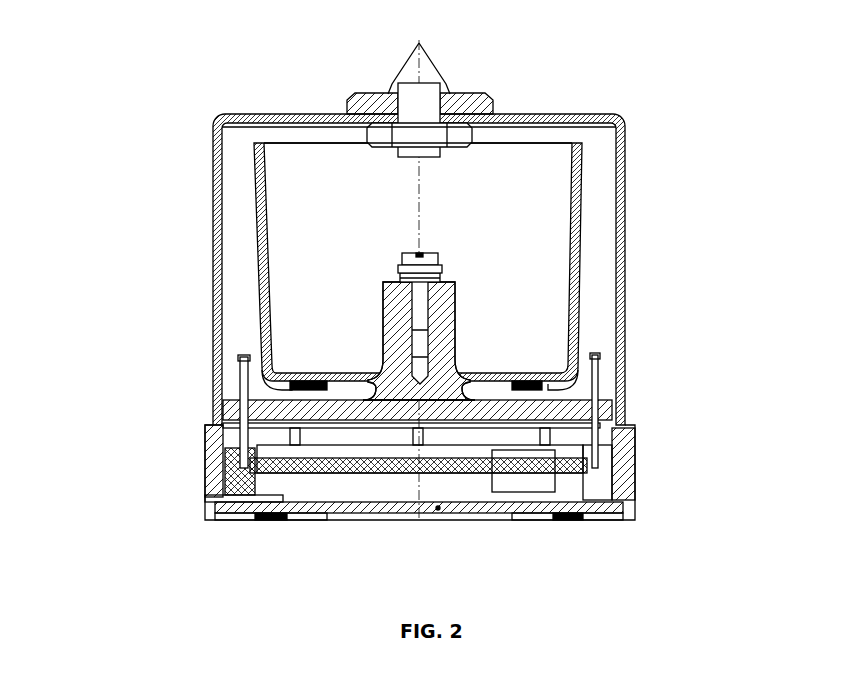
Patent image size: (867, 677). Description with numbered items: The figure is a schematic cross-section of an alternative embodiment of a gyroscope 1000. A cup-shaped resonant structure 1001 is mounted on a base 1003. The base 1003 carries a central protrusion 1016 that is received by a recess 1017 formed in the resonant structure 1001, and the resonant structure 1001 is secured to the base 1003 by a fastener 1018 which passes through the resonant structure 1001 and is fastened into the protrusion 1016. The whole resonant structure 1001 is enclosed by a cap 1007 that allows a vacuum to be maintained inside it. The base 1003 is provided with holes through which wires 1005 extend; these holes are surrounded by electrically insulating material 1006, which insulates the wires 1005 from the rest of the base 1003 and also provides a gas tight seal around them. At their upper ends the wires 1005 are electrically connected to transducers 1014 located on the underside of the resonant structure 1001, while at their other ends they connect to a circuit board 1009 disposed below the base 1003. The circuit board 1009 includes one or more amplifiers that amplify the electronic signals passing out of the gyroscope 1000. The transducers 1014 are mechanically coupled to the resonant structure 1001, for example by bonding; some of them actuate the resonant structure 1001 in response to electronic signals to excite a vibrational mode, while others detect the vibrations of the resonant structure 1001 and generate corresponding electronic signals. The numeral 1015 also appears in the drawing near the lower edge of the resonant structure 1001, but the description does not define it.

The gyroscope 1000 is at (146, 48).
The resonant structure 1001 is at (262, 237).
The base 1003 is at (560, 408).
The wires 1005 is at (242, 383).
The electrically insulating material 1006 is at (235, 417).
The cap 1007 is at (618, 300).
The circuit board 1009 is at (567, 463).
The transducers 1014 is at (302, 388).
The seal 1015 is at (266, 380).
The protrusion 1016 is at (403, 335).
The recess 1017 is at (457, 295).
The fastener 1018 is at (398, 262).